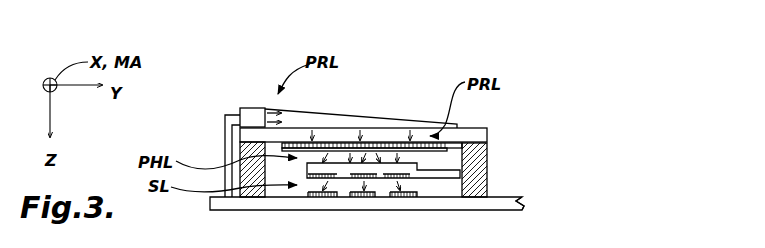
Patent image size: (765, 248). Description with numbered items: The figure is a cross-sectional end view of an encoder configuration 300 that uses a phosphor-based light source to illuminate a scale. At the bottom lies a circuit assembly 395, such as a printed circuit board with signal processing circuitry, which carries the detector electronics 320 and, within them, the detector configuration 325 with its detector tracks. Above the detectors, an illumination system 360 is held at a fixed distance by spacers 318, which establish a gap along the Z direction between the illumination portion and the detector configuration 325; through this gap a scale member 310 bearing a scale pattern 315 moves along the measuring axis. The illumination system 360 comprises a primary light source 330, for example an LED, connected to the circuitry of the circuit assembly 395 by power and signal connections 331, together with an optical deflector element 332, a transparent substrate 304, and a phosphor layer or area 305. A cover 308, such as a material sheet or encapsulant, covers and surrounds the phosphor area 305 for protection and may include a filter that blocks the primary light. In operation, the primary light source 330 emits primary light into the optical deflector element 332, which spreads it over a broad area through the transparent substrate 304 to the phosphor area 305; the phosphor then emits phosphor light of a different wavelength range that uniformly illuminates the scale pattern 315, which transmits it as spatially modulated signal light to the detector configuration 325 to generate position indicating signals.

The encoder configuration 300 is at (214, 46).
The power and signal connections 331 is at (226, 116).
The primary light source 330 is at (258, 107).
The optical deflector element 332 is at (352, 116).
The transparent substrate 304 is at (473, 128).
The phosphor layer or area 305 is at (488, 129).
The illumination system 360 is at (579, 8).
The cover 308 is at (463, 145).
The scale member 310 is at (447, 150).
The spacers 318 is at (462, 169).
The scale pattern 315 is at (430, 181).
The detector configuration 325 is at (432, 192).
The detector electronics 320 is at (298, 198).
The circuit assembly 395 is at (524, 202).